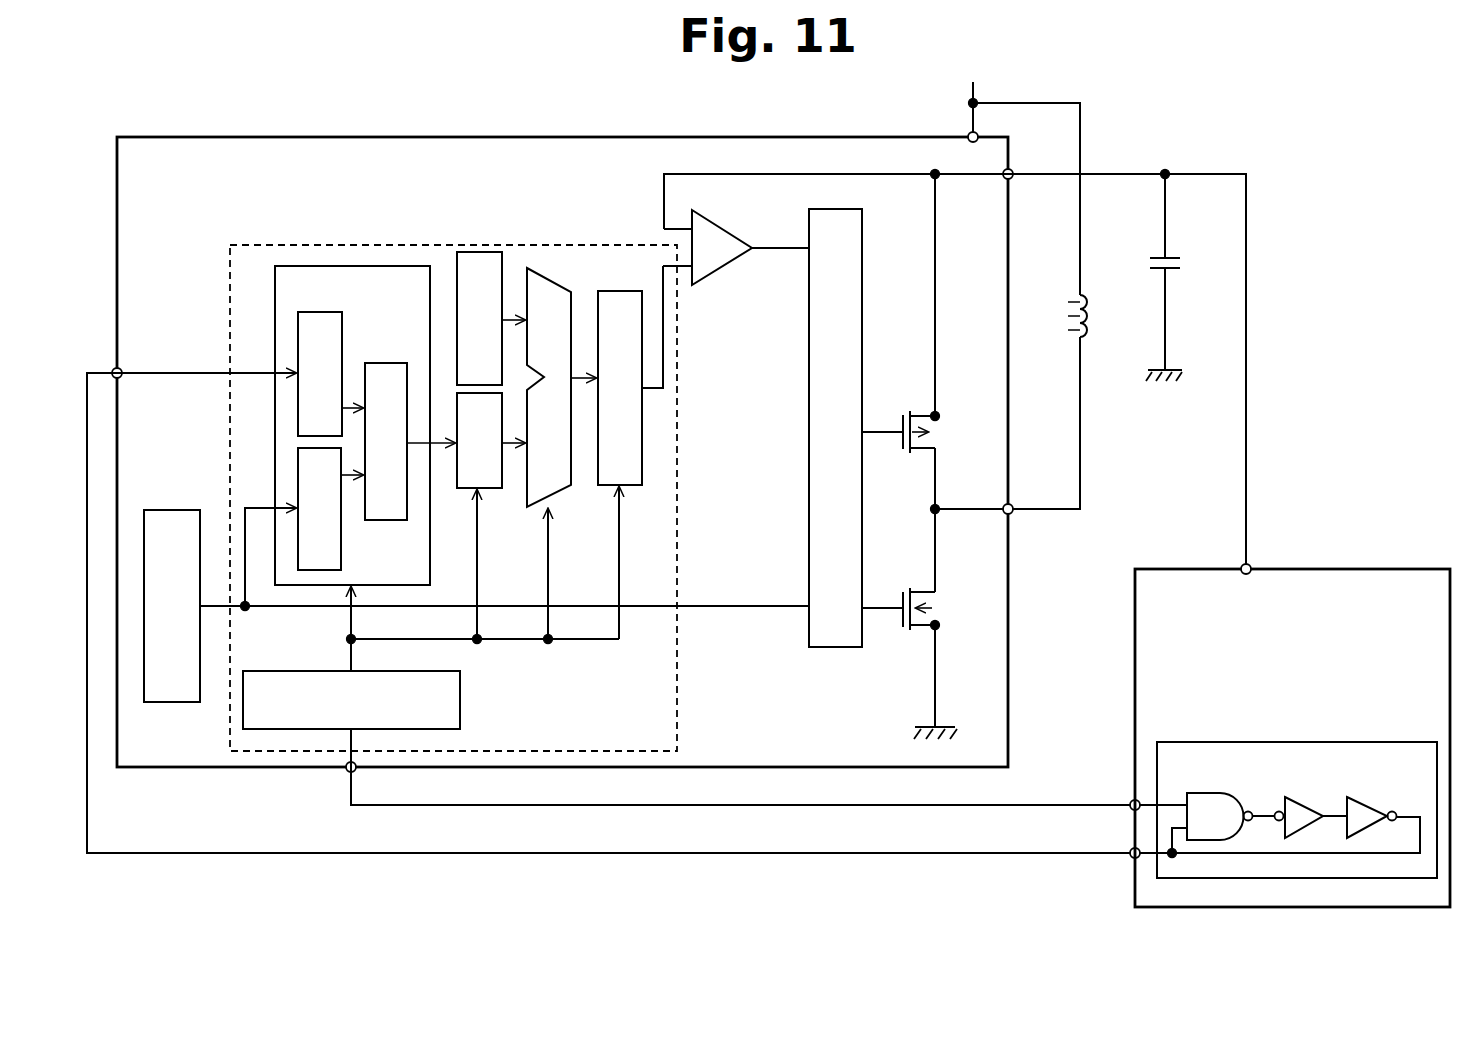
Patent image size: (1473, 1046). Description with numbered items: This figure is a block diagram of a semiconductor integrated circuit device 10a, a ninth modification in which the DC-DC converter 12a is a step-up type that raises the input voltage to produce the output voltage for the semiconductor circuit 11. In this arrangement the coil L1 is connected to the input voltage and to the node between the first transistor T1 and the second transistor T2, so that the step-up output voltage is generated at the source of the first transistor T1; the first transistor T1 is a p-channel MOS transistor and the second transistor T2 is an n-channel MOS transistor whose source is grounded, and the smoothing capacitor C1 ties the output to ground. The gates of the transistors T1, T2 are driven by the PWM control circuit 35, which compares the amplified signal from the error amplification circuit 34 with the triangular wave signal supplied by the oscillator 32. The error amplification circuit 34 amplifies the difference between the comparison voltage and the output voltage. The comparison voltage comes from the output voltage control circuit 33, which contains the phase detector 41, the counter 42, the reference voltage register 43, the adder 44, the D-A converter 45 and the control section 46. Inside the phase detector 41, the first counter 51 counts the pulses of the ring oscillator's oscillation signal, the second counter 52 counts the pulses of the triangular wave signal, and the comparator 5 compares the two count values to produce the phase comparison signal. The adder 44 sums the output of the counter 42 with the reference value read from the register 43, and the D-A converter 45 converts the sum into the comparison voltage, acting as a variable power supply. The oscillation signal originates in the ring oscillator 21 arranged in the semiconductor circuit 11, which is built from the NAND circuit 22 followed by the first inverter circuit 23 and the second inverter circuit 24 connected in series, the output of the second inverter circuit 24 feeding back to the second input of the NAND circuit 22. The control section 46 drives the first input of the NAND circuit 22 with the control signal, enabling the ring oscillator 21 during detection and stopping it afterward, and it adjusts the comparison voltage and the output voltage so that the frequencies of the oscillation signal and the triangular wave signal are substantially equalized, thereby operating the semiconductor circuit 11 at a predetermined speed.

The semiconductor integrated circuit device 10a is at (1368, 123).
The DC-DC converter 12a is at (1236, 156).
The semiconductor circuit 11 is at (1408, 569).
The ring oscillator 21 is at (1366, 742).
The NAND circuit 22 is at (1200, 793).
The first inverter circuit 23 is at (1308, 807).
The second inverter circuit 24 is at (1370, 807).
The oscillator 32 is at (172, 509).
The output voltage control circuit 33 is at (679, 337).
The error amplification circuit 34 is at (719, 224).
The PWM control circuit 35 is at (864, 222).
The phase detector 41 is at (396, 266).
The counter 42 is at (494, 490).
The reference voltage register 43 is at (474, 252).
The adder 44 is at (546, 268).
The D-A converter 45 is at (620, 290).
The control section 46 is at (462, 698).
The comparator 5 is at (400, 363).
The first counter 51 is at (344, 325).
The second counter 52 is at (342, 545).
The first transistor T1 is at (930, 443).
The second transistor T2 is at (930, 595).
The coil L1 is at (1100, 318).
The smoothing capacitor C1 is at (1170, 255).